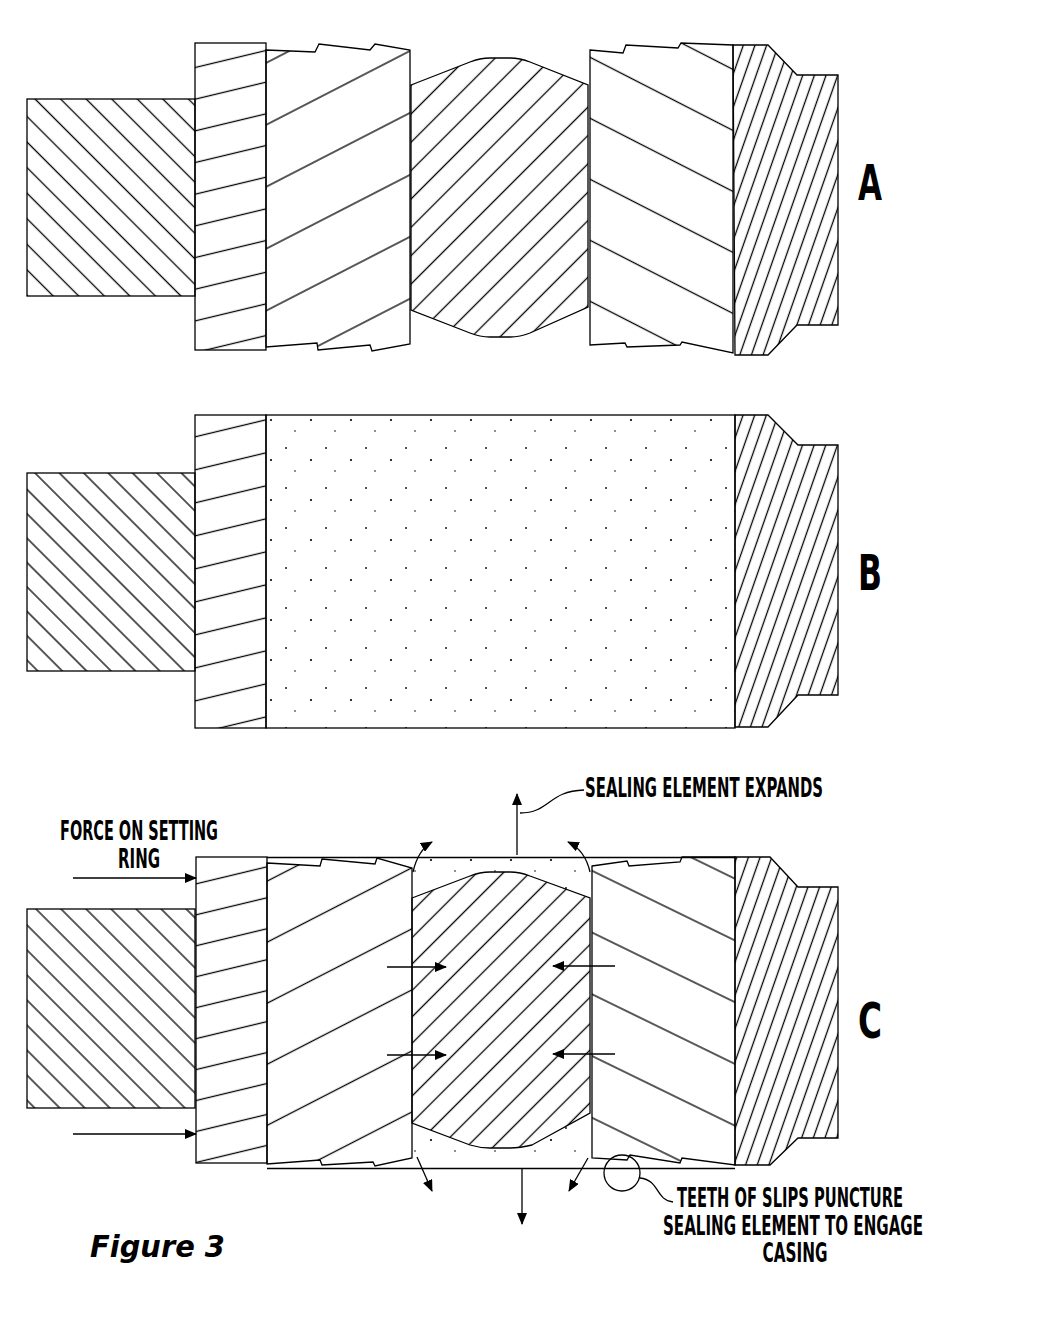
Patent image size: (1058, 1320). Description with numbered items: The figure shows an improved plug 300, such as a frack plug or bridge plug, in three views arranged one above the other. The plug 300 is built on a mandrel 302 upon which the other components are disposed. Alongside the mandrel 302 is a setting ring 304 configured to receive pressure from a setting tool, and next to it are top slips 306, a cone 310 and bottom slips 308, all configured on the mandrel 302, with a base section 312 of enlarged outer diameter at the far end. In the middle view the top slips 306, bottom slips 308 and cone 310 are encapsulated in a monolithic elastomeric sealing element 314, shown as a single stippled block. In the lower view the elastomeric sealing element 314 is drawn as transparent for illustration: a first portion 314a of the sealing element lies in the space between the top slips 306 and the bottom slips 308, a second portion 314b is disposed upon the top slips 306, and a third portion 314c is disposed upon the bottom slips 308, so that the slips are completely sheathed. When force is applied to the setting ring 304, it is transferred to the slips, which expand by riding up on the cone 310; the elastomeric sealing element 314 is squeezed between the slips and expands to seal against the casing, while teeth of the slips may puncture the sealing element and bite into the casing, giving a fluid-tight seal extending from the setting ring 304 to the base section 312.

The plug 300 is at (209, 24).
The mandrel 302 is at (90, 204).
The setting ring 304 is at (265, 178).
The top slips 306 is at (312, 204).
The bottom slips 308 is at (652, 204).
The cone 310 is at (488, 204).
The base section 312 is at (770, 204).
The elastomeric sealing element 314 is at (482, 587).
The first portion of the elastomeric sealing element 314a is at (480, 865).
The second portion of the elastomeric sealing element 314b is at (371, 857).
The third portion of the elastomeric sealing element 314c is at (655, 856).